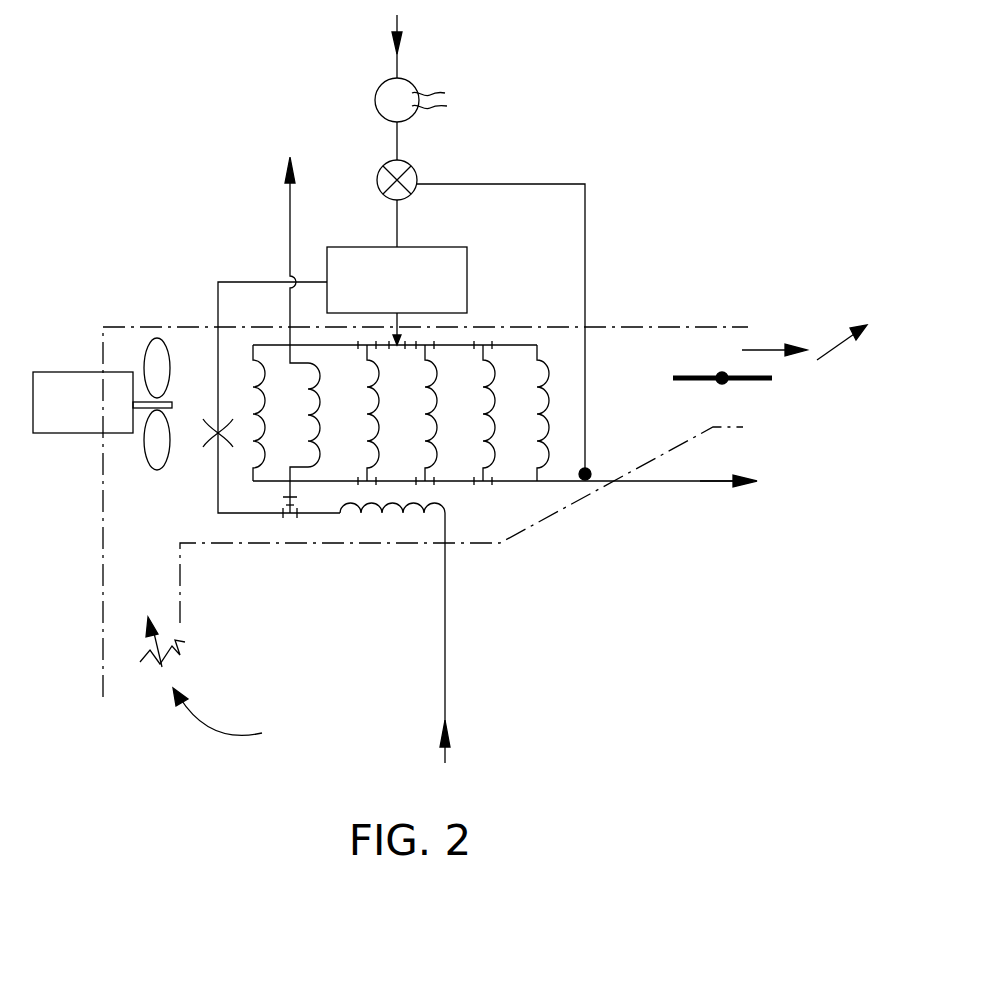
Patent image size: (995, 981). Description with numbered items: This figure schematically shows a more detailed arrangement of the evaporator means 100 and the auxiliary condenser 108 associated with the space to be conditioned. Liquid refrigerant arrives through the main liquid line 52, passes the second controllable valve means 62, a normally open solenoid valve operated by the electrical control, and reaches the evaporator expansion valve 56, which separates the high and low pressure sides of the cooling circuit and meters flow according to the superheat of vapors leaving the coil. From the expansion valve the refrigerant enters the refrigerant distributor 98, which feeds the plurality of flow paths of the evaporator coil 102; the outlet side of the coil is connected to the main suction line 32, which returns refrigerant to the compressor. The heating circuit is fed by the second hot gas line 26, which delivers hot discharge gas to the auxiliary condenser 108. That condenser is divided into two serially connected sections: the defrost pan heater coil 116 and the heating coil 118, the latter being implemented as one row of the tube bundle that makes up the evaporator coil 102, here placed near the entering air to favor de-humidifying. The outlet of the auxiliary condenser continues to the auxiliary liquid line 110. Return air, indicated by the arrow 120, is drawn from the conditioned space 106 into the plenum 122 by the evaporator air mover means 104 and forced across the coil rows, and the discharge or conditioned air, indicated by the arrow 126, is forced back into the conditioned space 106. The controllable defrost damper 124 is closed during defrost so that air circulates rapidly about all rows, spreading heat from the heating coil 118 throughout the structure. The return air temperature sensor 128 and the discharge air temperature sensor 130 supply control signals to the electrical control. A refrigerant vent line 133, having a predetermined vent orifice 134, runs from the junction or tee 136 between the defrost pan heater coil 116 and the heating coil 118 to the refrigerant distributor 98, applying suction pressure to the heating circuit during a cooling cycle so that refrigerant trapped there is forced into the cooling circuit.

The second hot gas line 26 is at (445, 600).
The main suction line 32 is at (714, 490).
The main liquid line 52 is at (395, 25).
The evaporator expansion valve 56 is at (418, 169).
The second controllable valve means 62 is at (376, 107).
The refrigerant distributor 98 is at (372, 295).
The evaporator means 100 is at (603, 532).
The evaporator coil 102 is at (523, 345).
The evaporator air mover means 104 is at (58, 418).
The conditioned space 106 is at (815, 427).
The auxiliary condenser 108 is at (300, 513).
The auxiliary liquid line 110 is at (290, 212).
The defrost pan heater coil 116 is at (440, 497).
The heating coil 118 is at (307, 426).
The return air 120 is at (205, 730).
The plenum 122 is at (120, 494).
The controllable defrost damper 124 is at (710, 384).
The discharge or conditioned air 126 is at (770, 350).
The return air temperature sensor 128 is at (185, 657).
The discharge air temperature sensor 130 is at (835, 372).
The refrigerant vent line 133 is at (216, 291).
The vent orifice 134 is at (212, 442).
The junction or tee 136 is at (287, 520).